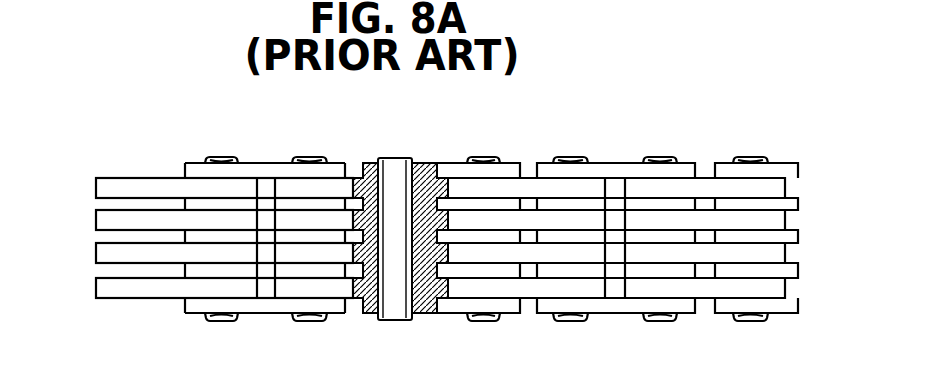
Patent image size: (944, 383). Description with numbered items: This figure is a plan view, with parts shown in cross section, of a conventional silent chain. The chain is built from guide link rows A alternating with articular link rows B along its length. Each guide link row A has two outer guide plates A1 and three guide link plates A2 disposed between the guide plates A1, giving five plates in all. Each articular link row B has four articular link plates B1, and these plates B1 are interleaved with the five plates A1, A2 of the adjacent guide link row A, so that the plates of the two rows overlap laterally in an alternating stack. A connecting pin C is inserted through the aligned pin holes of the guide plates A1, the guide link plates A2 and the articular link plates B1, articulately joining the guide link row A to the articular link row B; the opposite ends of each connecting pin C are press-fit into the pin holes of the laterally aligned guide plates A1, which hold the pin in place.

The guide link row A is at (182, 147).
The articular link row B is at (90, 325).
The connecting pin C is at (378, 160).
The guide plate A1 is at (798, 171).
The guide link plate A2 is at (798, 204).
The articular link plate B1 is at (96, 188).